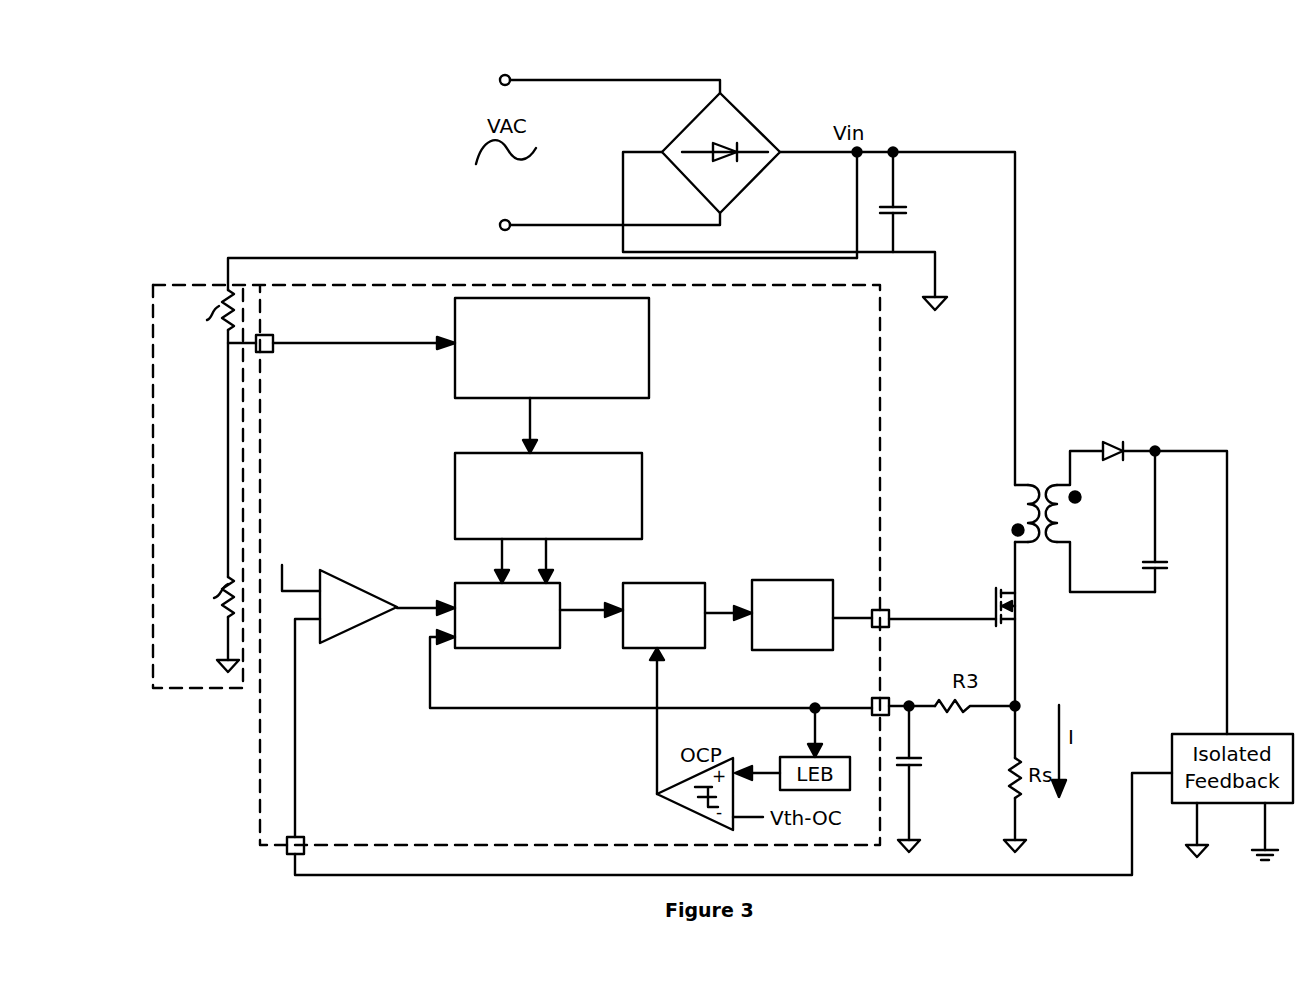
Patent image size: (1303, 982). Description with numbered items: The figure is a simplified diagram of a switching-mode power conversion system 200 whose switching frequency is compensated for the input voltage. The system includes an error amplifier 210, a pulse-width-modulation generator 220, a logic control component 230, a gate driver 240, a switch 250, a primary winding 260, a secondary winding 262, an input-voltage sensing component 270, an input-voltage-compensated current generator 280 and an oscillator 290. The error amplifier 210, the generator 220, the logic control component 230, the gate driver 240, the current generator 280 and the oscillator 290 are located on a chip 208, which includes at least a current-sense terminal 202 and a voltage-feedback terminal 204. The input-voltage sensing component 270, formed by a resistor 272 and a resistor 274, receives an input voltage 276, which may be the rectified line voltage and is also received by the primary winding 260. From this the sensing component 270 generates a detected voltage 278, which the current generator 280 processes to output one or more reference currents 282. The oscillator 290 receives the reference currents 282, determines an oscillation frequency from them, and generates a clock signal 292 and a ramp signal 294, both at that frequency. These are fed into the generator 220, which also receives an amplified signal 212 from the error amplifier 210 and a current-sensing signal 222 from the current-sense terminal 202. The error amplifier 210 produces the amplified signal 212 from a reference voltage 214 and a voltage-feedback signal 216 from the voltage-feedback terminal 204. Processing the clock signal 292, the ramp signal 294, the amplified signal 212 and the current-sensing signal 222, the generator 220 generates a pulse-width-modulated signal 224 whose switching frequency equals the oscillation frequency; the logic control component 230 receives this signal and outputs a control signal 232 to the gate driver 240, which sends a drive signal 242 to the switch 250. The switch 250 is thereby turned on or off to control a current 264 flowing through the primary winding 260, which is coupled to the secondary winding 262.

The switching-mode power conversion system 200 is at (185, 136).
The terminal CS 202 is at (886, 698).
The terminal VFB 204 is at (286, 852).
The chip 208 is at (882, 348).
The error amplifier 210 is at (343, 645).
The amplified signal 212 is at (400, 610).
The reference voltage 214 is at (278, 581).
The voltage-feedback signal 216 is at (297, 783).
The PWM generator 220 is at (505, 648).
The current-sensing signal 222 is at (473, 710).
The PWM signal 224 is at (563, 613).
The logic control component 230 is at (668, 583).
The control signal 232 is at (722, 616).
The gate driver 240 is at (795, 580).
The drive signal 242 is at (860, 621).
The switch 250 is at (995, 600).
The primary winding 260 is at (1030, 482).
The secondary winding 262 is at (1060, 545).
The current 264 is at (1017, 558).
The input-voltage sensing component 270 is at (153, 292).
The resistor 272 is at (209, 621).
The resistor 274 is at (207, 316).
The input voltage 276 is at (857, 187).
The detected voltage 278 is at (259, 334).
The input-voltage-compensated current generator 280 is at (650, 358).
The reference currents 282 is at (538, 428).
The oscillator 290 is at (643, 503).
The clock signal 292 is at (548, 550).
The ramp signal 294 is at (500, 559).